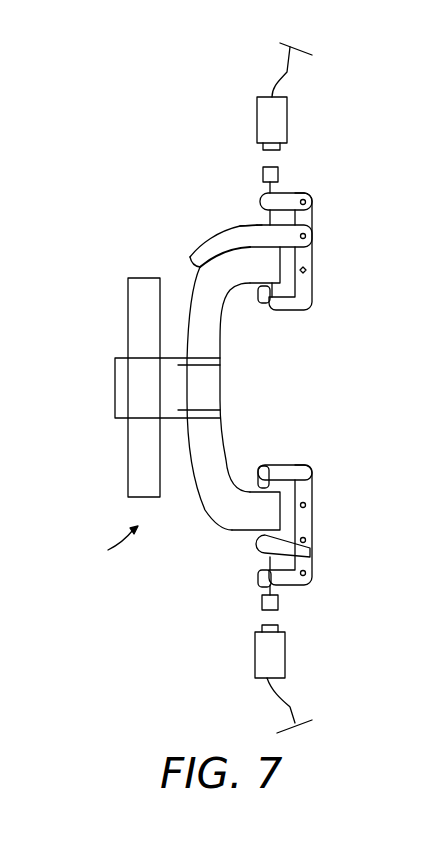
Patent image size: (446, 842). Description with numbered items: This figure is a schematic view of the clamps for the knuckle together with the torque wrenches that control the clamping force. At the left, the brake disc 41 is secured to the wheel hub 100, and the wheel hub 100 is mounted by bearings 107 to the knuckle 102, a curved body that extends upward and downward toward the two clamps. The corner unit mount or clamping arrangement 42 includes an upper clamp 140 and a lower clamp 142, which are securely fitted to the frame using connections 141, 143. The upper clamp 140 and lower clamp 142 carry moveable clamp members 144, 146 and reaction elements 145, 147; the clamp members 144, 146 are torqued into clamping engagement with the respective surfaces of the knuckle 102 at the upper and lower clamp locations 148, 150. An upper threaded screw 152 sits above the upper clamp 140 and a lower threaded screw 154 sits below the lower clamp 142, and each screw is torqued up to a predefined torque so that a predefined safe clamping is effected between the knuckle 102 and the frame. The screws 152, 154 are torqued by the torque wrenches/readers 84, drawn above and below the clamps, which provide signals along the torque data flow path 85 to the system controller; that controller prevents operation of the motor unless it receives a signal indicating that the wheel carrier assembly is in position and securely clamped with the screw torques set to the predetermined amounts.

The brake disc 41 is at (128, 290).
The corner unit mount or clamping arrangement 42 is at (110, 546).
The torque wrenches/readers 84 is at (287, 128).
The torque data flow path 85 is at (290, 70).
The wheel hub 100 is at (117, 387).
The knuckle 102 is at (225, 340).
The bearings 107 is at (203, 367).
The upper clamp 140 is at (312, 252).
The connection 141 is at (313, 271).
The lower clamp 142 is at (283, 523).
The connection 143 is at (313, 575).
The moveable clamp member 144 is at (193, 254).
The reaction element 145 is at (259, 304).
The moveable clamp member 146 is at (258, 577).
The reaction element 147 is at (263, 465).
The upper clamp location 148 is at (258, 230).
The lower clamp location 150 is at (265, 512).
The upper threaded screw 152 is at (280, 176).
The lower threaded screw 154 is at (280, 598).